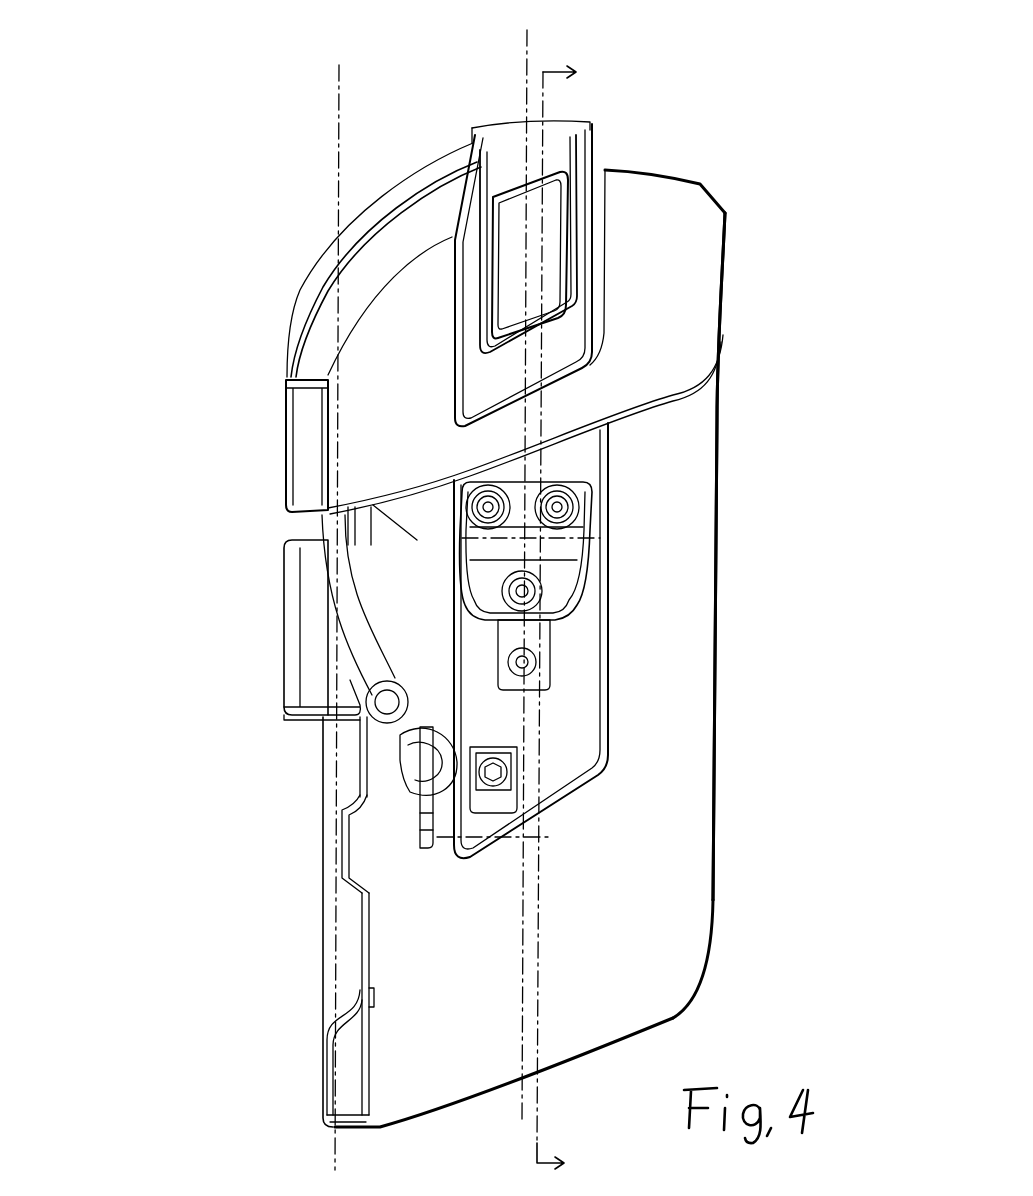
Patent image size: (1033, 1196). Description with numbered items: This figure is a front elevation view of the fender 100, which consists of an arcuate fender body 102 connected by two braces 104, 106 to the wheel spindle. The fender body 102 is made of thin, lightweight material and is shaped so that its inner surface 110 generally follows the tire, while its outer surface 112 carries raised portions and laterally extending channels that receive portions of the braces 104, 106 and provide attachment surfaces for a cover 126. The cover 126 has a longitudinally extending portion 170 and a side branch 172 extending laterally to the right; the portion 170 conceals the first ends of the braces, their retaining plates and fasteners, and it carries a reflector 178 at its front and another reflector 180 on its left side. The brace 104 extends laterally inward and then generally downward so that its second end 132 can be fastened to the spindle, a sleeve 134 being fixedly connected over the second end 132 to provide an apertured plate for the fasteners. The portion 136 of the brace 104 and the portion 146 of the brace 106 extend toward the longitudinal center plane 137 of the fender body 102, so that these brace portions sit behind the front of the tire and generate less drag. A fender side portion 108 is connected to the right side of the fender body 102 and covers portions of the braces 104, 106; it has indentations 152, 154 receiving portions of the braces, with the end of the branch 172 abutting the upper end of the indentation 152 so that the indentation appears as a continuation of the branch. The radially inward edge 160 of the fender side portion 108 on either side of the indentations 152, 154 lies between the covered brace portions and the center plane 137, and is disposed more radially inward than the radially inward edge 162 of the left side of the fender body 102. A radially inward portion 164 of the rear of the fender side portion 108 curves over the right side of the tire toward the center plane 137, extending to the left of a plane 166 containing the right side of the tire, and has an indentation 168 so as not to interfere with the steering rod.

The fender 100 is at (217, 176).
The fender body 102 is at (655, 210).
The brace 104 is at (312, 548).
The brace 106 is at (433, 710).
The fender side portion 108 is at (327, 993).
The inner surface 110 is at (675, 847).
The outer surface 112 is at (693, 297).
The cover 126 is at (505, 125).
The second end 132 is at (355, 735).
The sleeve 134 is at (410, 775).
The portion 136 is at (345, 650).
The longitudinal center plane 137 is at (520, 1013).
The portion 146 is at (352, 677).
The indentation 152 is at (282, 457).
The indentation 154 is at (290, 628).
The radially inward edge 160 is at (357, 968).
The radially inward edge 162 is at (725, 455).
The radially inward portion 164 is at (350, 995).
The plane 166 is at (340, 90).
The indentation 168 is at (363, 935).
The longitudinally extending portion 170 is at (577, 132).
The side branch 172 is at (392, 250).
The reflector 178 is at (548, 227).
The reflector 180 is at (605, 160).